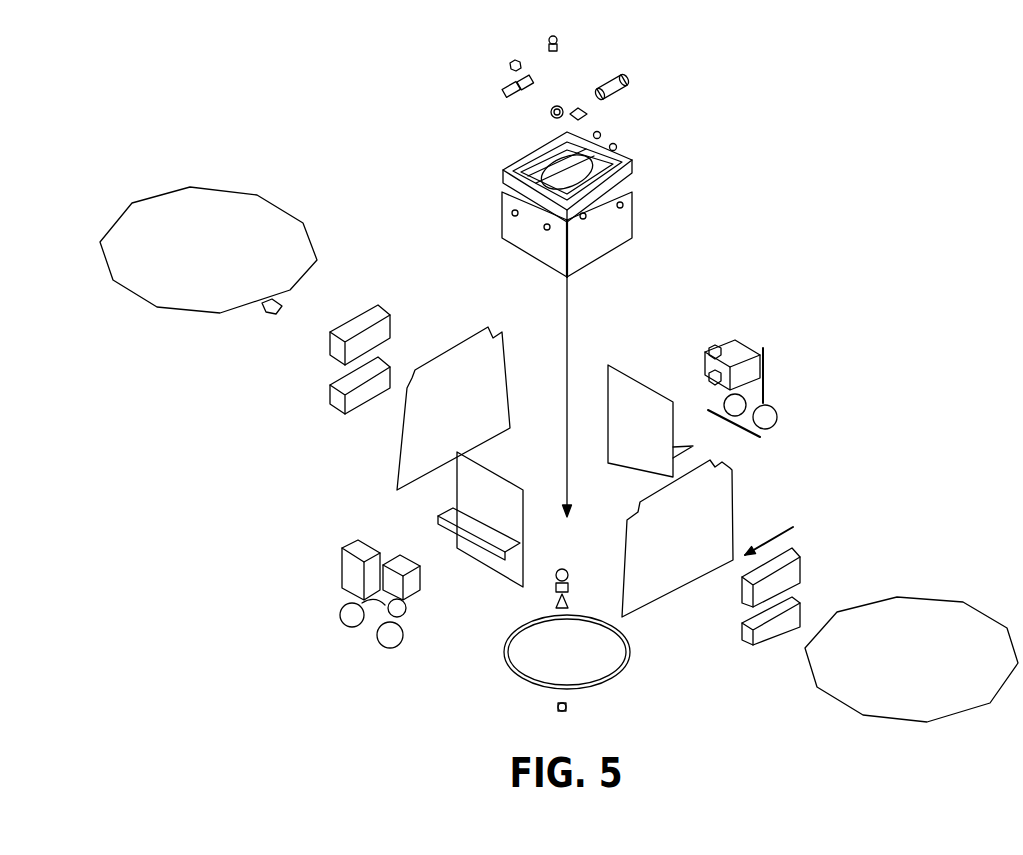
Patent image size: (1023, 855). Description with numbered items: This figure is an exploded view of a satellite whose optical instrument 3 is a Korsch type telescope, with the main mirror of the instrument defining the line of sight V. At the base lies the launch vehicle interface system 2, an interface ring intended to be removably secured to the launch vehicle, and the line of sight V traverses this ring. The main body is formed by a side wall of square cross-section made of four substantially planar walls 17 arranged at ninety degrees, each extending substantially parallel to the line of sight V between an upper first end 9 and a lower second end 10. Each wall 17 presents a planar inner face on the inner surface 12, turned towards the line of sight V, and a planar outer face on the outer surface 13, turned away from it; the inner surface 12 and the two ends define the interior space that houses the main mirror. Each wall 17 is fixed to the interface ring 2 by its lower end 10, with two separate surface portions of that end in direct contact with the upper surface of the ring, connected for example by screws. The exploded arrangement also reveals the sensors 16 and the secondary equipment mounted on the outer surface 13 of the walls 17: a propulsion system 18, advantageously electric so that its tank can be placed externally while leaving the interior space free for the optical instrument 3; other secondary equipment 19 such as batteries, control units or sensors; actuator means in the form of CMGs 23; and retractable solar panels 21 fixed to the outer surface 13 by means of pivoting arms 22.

The launch vehicle interface system 2 is at (512, 672).
The optical instrument 3 is at (497, 215).
The upper first end 9 is at (448, 350).
The lower second end 10 is at (417, 490).
The inner surface 12 is at (633, 427).
The outer surface 13 is at (657, 573).
The sensors 16 is at (510, 70).
The planar walls 17 is at (398, 433).
The propulsion system 18 is at (413, 602).
The secondary equipment 19 is at (402, 330).
The retractable solar panels 21 is at (137, 300).
The pivoting arms 22 is at (267, 317).
The CMGs 23 is at (633, 220).
The line of sight V is at (565, 380).